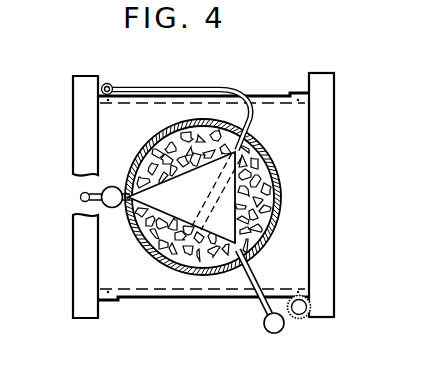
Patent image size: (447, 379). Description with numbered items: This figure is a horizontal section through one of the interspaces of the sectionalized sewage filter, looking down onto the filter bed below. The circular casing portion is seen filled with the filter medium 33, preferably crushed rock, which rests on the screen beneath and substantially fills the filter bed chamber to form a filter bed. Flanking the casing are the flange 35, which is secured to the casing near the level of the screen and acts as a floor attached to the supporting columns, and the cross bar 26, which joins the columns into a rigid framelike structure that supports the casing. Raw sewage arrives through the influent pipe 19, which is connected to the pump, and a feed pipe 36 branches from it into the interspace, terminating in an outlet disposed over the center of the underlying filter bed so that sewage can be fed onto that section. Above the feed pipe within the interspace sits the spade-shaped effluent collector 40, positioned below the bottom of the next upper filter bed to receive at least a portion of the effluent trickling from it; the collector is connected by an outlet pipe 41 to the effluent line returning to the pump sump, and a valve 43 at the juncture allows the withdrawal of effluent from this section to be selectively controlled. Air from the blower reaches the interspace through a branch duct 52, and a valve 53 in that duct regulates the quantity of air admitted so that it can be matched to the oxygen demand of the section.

The influent pipe 19 is at (104, 83).
The cross bar 26 is at (82, 143).
The filter medium 33 is at (258, 234).
The flange 35 is at (113, 243).
The feed pipe 36 is at (148, 88).
The effluent collector 40 is at (227, 180).
The outlet pipe 41 is at (81, 191).
The valve 43 is at (100, 205).
The branch duct 52 is at (257, 303).
The valve 53 is at (284, 326).